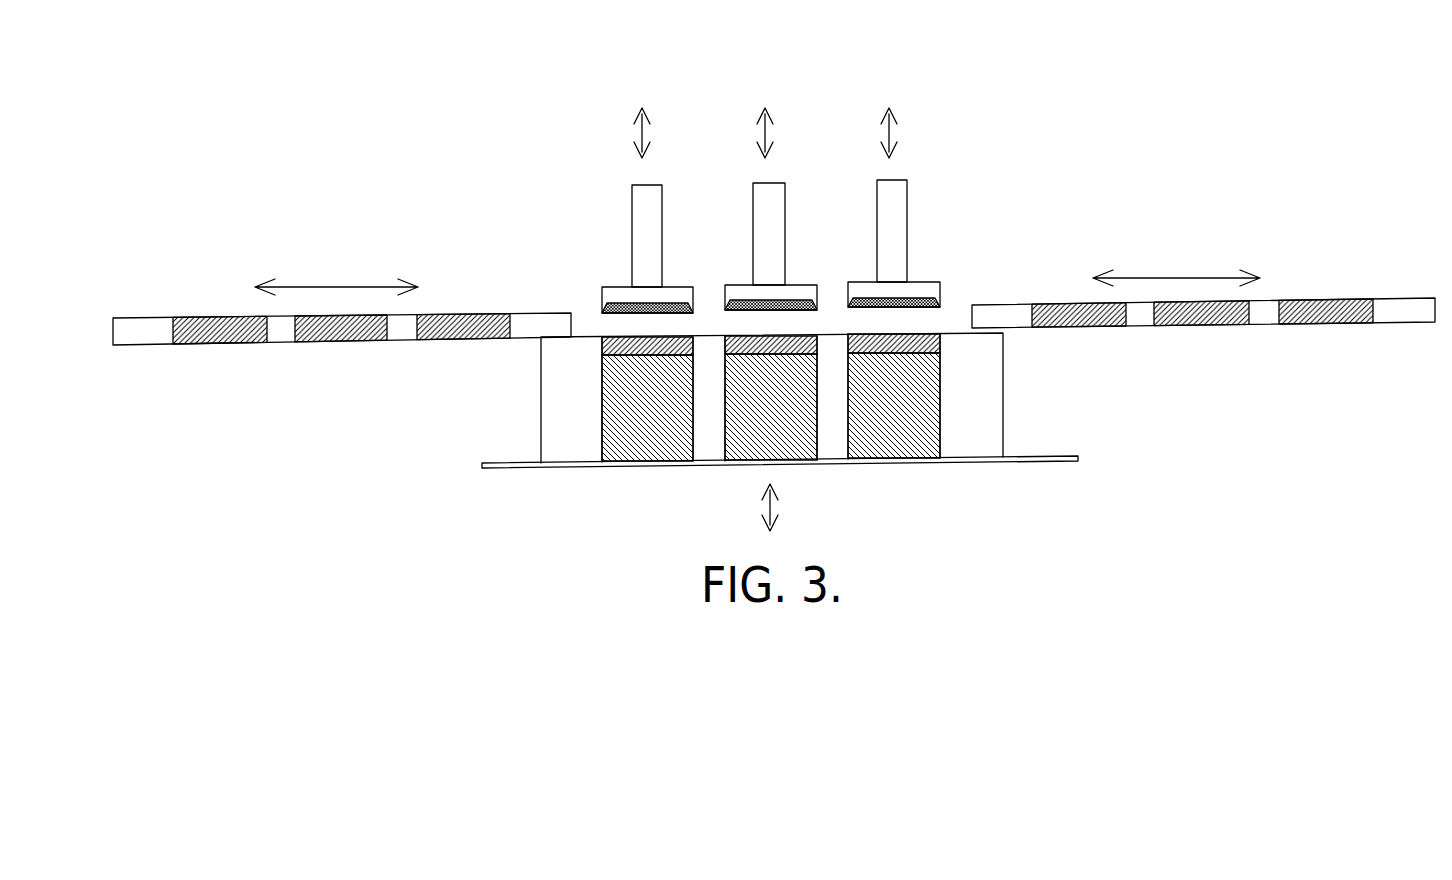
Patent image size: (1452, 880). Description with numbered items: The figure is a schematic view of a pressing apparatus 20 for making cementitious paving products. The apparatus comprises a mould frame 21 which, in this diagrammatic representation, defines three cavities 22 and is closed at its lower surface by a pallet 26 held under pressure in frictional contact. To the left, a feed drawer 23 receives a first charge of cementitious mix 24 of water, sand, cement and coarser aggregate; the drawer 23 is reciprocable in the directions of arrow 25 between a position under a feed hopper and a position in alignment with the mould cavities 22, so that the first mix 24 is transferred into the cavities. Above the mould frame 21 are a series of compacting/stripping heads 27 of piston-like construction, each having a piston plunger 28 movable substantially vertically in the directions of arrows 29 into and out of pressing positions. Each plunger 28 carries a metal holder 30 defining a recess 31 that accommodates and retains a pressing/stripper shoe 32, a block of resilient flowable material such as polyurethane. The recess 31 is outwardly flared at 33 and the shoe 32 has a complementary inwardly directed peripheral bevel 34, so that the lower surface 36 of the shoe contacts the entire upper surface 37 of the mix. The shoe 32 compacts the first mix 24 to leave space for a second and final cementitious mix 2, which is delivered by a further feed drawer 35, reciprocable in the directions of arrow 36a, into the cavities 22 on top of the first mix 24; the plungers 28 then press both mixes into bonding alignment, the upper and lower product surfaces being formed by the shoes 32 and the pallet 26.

The second cementitious mix 2 is at (865, 343).
The pressing apparatus 20 is at (1092, 176).
The mould frame 21 is at (541, 436).
The mould cavities 22 is at (603, 432).
The feed drawer 23 is at (140, 318).
The first cementitious mix 24 is at (205, 343).
The arrow 25 is at (336, 287).
The pallet 26 is at (507, 472).
The compacting/stripping heads 27 is at (928, 152).
The piston plunger 28 is at (647, 203).
The arrows 29 is at (760, 110).
The metal holder 30 is at (807, 289).
The recess 31 is at (754, 282).
The pressing/stripper shoe 32 is at (730, 305).
The outward flare 33 is at (613, 305).
The peripheral bevel 34 is at (603, 308).
The further feed drawer 35 is at (1408, 298).
The lower surface of the pressing shoe 36 is at (923, 306).
The arrow 36a is at (1196, 277).
The upper surface of the mix 37 is at (918, 340).